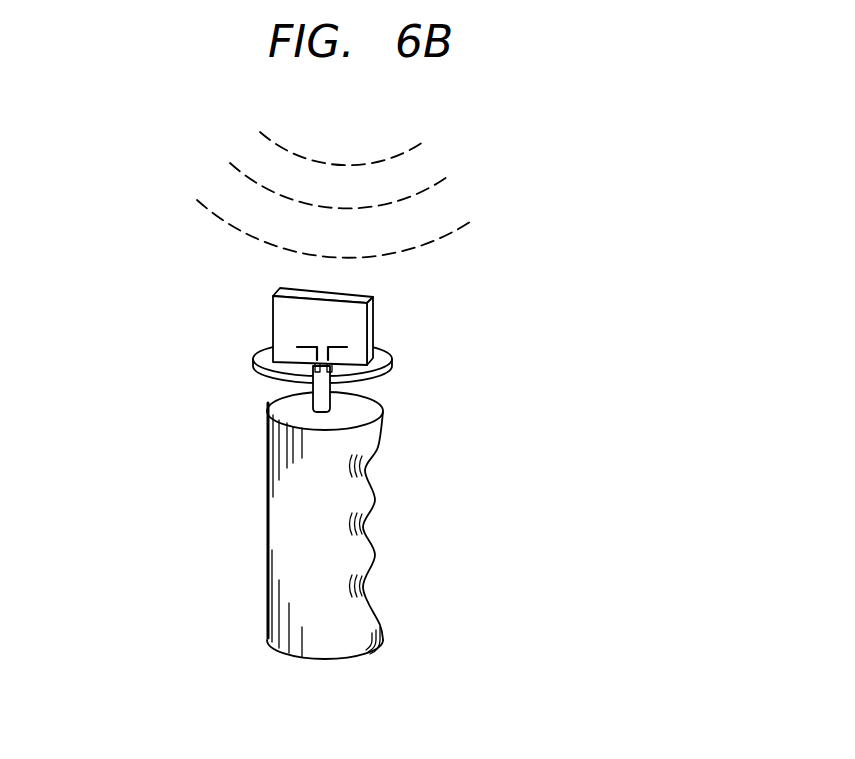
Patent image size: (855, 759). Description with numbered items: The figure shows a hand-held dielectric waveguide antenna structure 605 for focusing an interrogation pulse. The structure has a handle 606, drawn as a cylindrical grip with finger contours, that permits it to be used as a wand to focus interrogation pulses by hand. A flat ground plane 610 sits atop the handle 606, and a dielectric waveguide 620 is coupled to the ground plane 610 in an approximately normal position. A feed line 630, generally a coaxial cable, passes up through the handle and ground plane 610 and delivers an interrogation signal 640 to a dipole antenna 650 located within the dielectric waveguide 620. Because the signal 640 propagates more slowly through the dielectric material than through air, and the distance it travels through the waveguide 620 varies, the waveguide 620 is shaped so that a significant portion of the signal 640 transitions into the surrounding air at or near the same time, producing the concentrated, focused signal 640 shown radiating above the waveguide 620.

The dielectric waveguide antenna structure 605 is at (240, 593).
The handle 606 is at (374, 555).
The ground plane 610 is at (388, 372).
The dielectric waveguide 620 is at (374, 307).
The feed line 630 is at (267, 407).
The interrogation signal 640 is at (176, 246).
The dipole antenna 650 is at (297, 347).